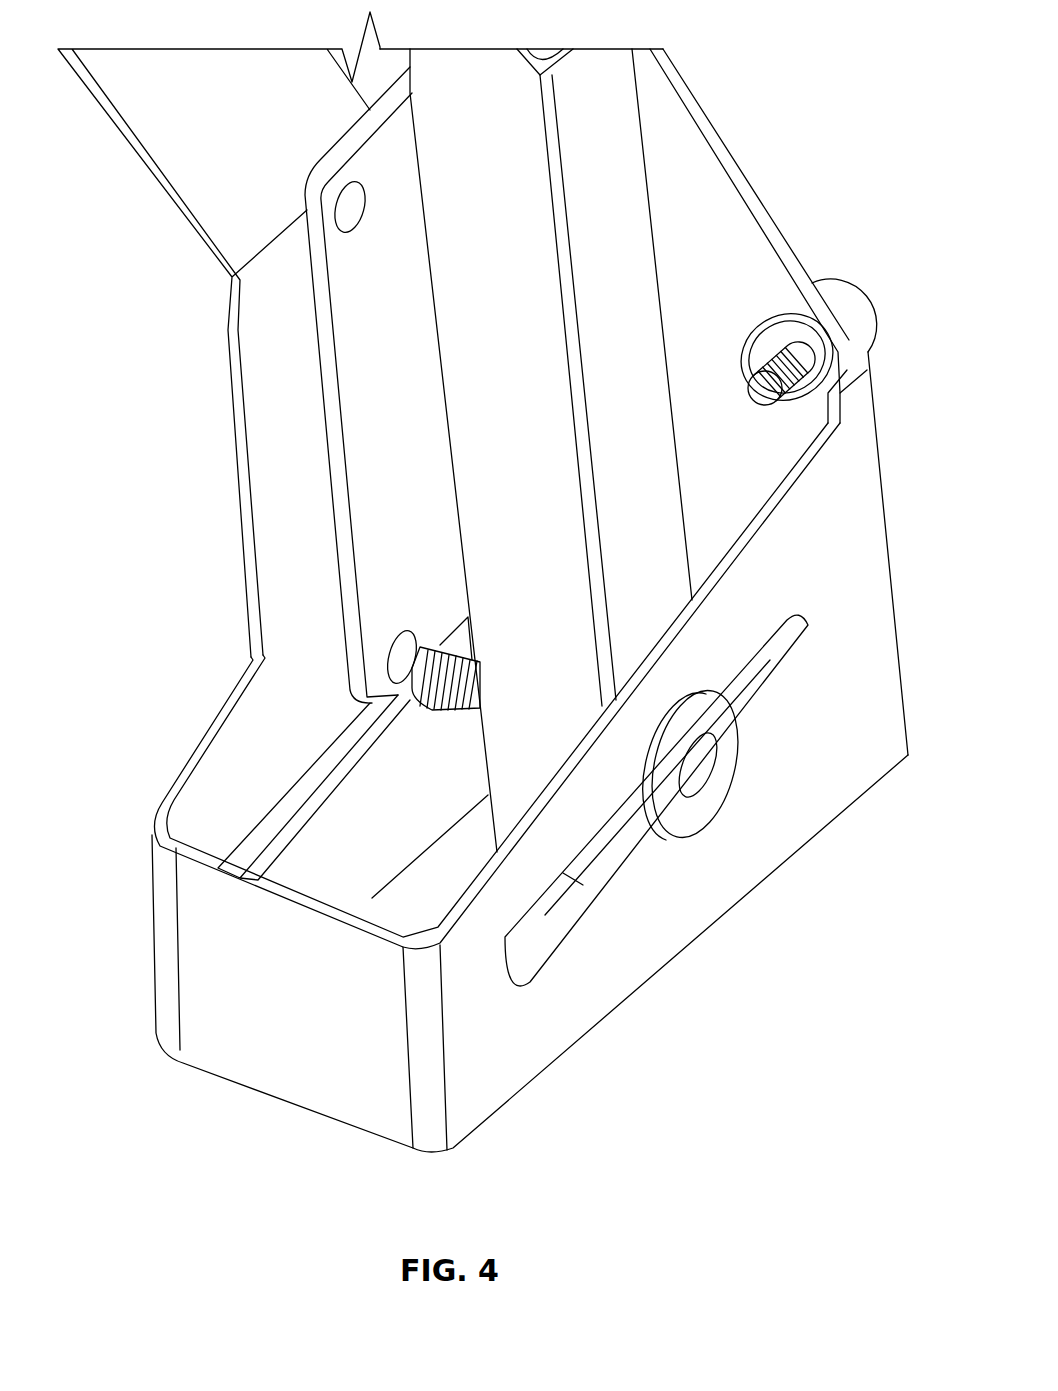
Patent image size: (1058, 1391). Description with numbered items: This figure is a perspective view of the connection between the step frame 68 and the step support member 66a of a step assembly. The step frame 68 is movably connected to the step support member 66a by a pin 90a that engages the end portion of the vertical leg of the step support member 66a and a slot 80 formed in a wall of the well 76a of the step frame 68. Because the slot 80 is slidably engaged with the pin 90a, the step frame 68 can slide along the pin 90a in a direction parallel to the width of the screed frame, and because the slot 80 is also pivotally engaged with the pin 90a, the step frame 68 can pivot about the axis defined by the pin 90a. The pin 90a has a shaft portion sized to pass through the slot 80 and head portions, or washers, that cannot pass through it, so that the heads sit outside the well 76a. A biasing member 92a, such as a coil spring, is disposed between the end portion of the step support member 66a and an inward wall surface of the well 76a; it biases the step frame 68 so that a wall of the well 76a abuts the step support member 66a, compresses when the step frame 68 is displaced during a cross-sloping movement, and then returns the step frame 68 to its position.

The step frame 68 is at (262, 144).
The step support member 66a is at (520, 355).
The biasing member 92a is at (420, 668).
The well 76a is at (400, 906).
The slot 80 is at (557, 907).
The pin 90a is at (712, 772).